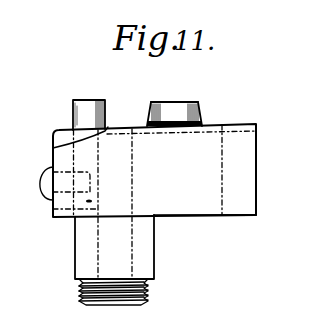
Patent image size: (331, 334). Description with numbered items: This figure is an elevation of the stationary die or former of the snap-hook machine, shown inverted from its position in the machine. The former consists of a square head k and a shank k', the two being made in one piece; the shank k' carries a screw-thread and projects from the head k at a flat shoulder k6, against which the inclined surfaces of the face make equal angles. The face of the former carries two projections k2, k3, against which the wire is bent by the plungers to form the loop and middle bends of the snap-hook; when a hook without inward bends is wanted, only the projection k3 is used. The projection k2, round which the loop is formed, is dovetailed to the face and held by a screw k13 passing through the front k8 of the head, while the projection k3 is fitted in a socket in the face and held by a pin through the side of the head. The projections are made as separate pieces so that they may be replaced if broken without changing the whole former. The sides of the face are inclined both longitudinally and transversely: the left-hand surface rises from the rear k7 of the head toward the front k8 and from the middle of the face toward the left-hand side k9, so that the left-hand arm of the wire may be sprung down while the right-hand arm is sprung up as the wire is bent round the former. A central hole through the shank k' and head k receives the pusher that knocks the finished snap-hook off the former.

The head of the former k is at (154, 200).
The shank of the former k' is at (127, 260).
The projection k2 is at (89, 100).
The projection k3 is at (174, 98).
The flat shoulder k6 is at (205, 226).
The rear of the head k7 is at (262, 112).
The front of the head k8 is at (107, 131).
The left-hand side of the head k9 is at (181, 145).
The screw k13 is at (60, 184).